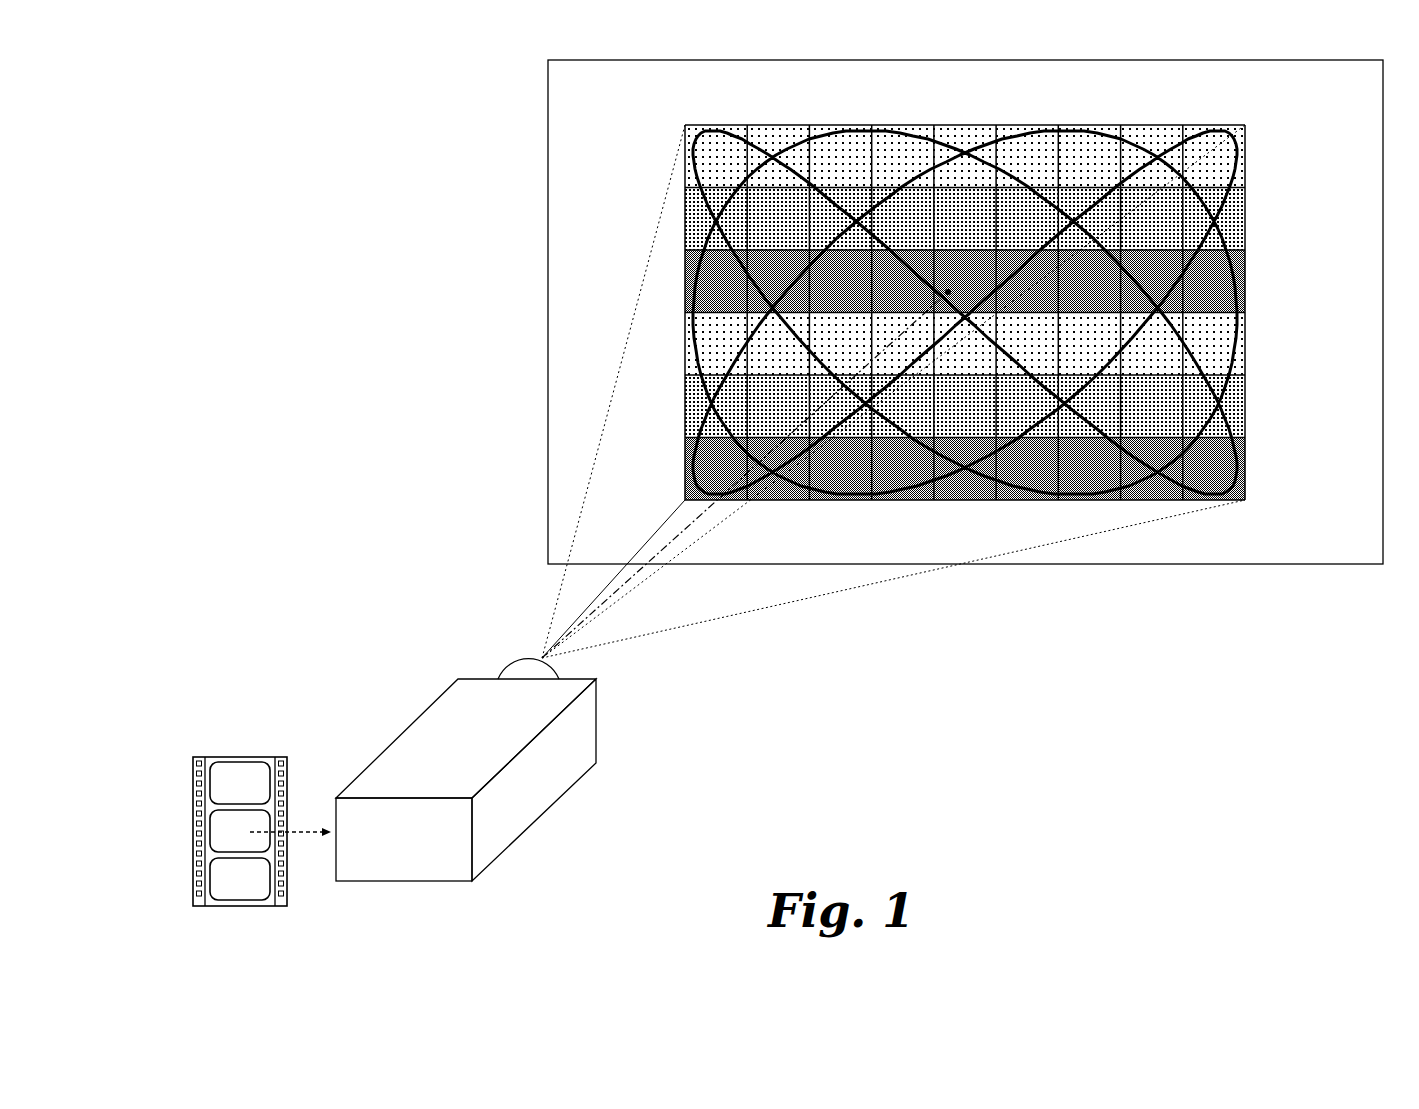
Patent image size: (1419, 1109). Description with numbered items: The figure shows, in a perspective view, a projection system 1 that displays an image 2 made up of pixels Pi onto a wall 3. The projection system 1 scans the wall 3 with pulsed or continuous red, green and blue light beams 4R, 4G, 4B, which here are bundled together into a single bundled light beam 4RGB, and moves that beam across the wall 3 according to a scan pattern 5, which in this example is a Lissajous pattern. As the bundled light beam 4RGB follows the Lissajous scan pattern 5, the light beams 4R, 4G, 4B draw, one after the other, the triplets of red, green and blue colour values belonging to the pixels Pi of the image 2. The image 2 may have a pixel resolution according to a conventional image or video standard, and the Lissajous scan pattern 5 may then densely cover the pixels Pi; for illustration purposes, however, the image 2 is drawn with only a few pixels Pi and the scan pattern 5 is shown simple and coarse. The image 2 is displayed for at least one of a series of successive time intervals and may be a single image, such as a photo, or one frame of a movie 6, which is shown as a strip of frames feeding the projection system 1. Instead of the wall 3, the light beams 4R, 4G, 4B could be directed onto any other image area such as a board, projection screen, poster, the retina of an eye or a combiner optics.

The projection system 1 is at (378, 686).
The image 2 is at (1246, 415).
The wall 3 is at (548, 438).
The red light beam 4R is at (613, 579).
The green light beam 4G is at (745, 475).
The blue light beam 4B is at (623, 585).
The bundled light beam 4RGB is at (893, 434).
The scan pattern 5 is at (840, 135).
The movie 6 is at (194, 783).
The pixels Pi is at (912, 418).